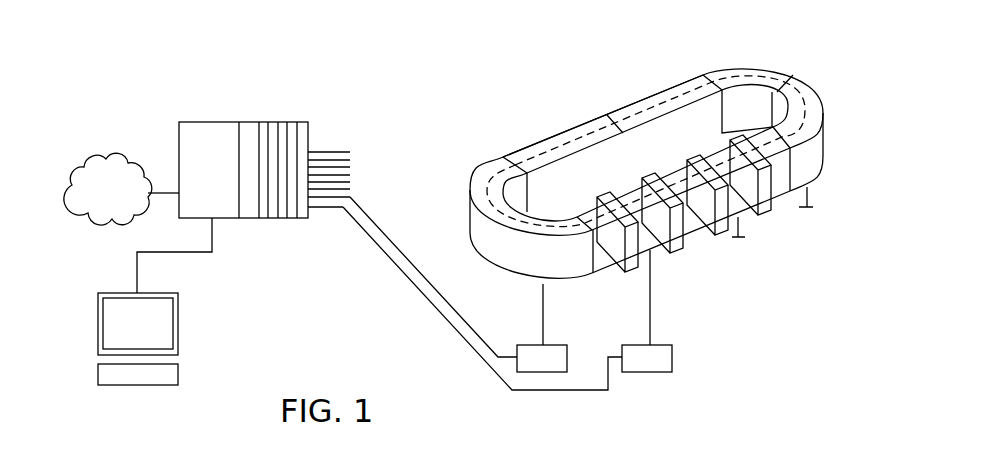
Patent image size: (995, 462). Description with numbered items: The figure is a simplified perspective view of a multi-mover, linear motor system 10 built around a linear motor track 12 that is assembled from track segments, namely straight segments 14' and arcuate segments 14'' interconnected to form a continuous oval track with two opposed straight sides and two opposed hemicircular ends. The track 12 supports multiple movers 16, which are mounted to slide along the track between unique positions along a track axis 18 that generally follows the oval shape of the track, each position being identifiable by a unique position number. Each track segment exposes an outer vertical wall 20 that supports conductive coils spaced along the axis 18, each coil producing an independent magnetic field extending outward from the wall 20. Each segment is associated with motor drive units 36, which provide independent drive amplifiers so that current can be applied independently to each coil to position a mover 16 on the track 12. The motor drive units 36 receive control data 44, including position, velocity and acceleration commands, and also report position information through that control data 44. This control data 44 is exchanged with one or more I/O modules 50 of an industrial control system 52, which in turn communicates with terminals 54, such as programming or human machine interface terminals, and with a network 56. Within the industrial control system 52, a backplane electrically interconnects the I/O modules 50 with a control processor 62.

The multi-mover, linear motor system 10 is at (744, 47).
The linear motor track 12 is at (813, 70).
The straight segments 14' is at (603, 115).
The arcuate segments 14'' is at (794, 175).
The movers 16 is at (715, 232).
The track axis 18 is at (517, 145).
The outer vertical wall 20 is at (528, 270).
The motor drive units 36 is at (568, 360).
The control data 44 is at (437, 300).
The I/O modules 50 is at (295, 122).
The industrial control system 52 is at (154, 87).
The terminals 54 is at (71, 298).
The network 56 is at (119, 206).
The control processor 62 is at (247, 130).